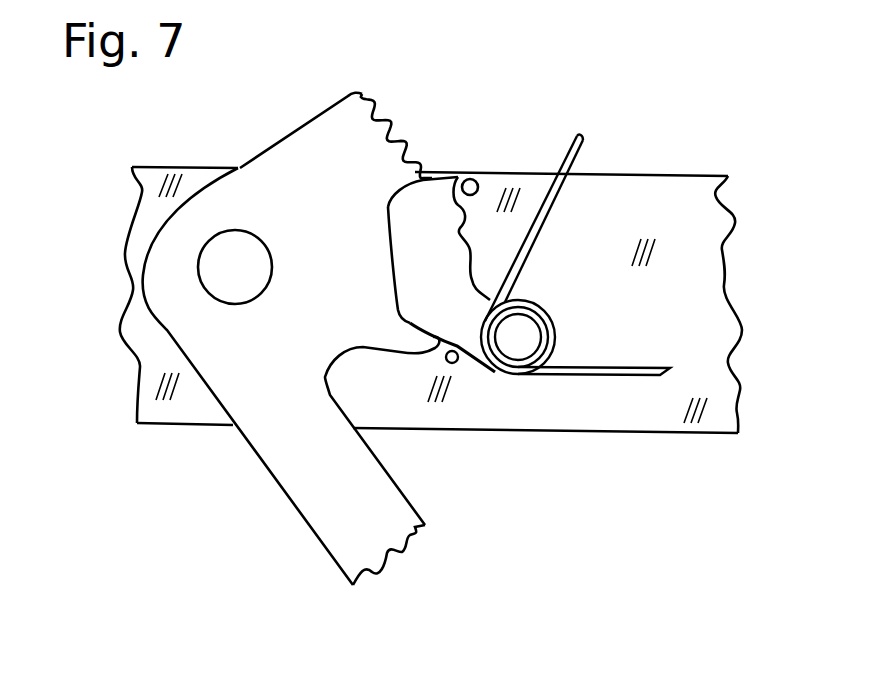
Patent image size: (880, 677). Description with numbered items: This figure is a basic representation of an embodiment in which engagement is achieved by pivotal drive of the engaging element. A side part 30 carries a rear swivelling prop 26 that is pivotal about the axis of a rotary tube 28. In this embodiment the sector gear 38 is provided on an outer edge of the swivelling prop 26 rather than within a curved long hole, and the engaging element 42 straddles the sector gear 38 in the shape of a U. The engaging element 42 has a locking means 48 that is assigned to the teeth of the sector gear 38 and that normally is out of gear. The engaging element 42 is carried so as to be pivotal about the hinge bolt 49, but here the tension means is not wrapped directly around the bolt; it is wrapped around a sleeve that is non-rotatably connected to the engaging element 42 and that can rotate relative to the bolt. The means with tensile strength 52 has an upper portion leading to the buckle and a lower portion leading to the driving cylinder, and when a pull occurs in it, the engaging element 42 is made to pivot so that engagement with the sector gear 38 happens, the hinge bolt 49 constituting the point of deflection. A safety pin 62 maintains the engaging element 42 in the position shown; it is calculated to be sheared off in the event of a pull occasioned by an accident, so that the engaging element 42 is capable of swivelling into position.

The swivelling prop 26 is at (299, 315).
The rotary tube 28 is at (226, 293).
The side part 30 is at (688, 197).
The sector gear 38 is at (392, 122).
The engaging element 42 is at (467, 191).
The locking means 48 is at (476, 172).
The hinge bolt 49 is at (518, 342).
The means with tensile strength 52 is at (585, 143).
The safety pin 62 is at (456, 363).